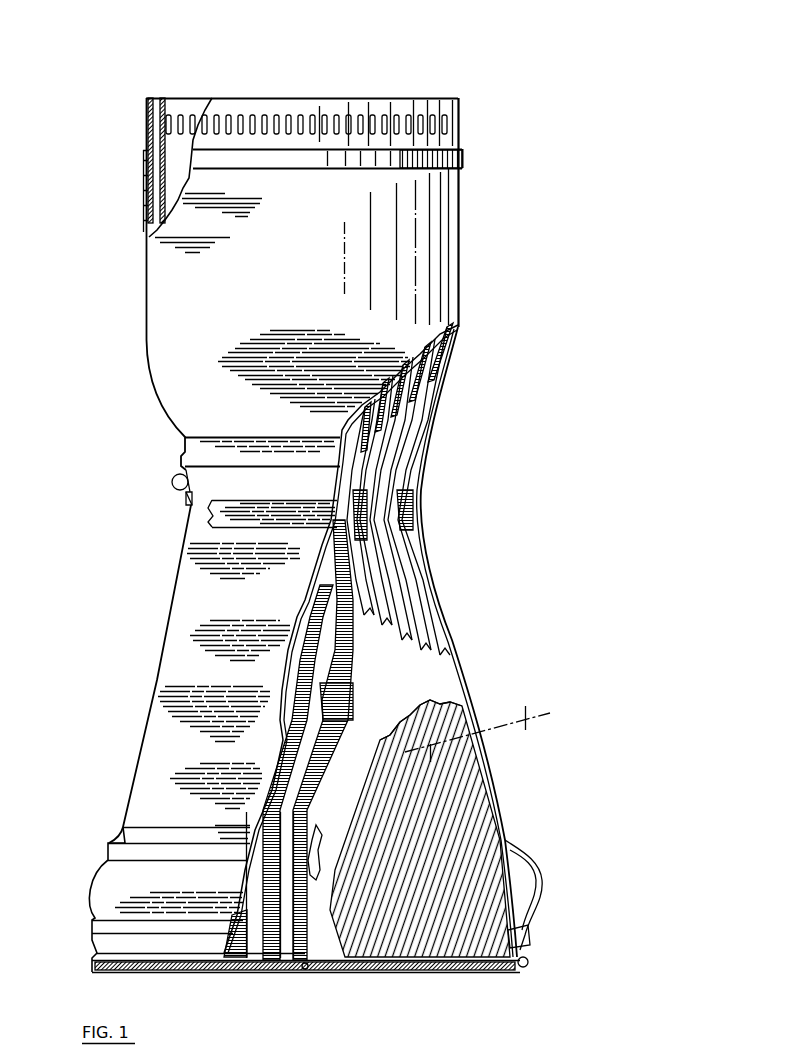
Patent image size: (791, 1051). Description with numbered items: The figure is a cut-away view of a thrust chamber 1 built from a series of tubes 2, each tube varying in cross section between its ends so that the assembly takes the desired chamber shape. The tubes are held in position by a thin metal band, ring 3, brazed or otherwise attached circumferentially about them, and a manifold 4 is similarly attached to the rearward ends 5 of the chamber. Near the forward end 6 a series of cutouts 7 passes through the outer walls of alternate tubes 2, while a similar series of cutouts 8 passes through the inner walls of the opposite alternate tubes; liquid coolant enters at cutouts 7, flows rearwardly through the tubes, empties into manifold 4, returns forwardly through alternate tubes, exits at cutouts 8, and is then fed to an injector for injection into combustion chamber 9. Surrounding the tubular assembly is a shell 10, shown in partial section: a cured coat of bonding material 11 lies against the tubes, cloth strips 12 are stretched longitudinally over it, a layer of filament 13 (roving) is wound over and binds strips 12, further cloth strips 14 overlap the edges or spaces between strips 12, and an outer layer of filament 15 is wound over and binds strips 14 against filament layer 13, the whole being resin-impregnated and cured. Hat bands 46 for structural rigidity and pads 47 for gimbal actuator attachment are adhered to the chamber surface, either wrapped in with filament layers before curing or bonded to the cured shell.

The thrust chamber 1 is at (447, 426).
The tubes 2 is at (149, 107).
The ring 3 is at (462, 158).
The manifold 4 is at (497, 960).
The rearward ends 5 is at (278, 973).
The forward end 6 is at (460, 104).
The cutouts 7 is at (377, 115).
The cutouts 8 is at (181, 113).
The combustion chamber 9 is at (178, 185).
The shell 10 is at (460, 639).
The bonding material 11 is at (430, 690).
The cloth strips 12 is at (318, 862).
The filament layer 13 is at (440, 368).
The cloth strips 14 is at (310, 617).
The outer filament layer 15 is at (178, 722).
The hat bands 46 is at (112, 887).
The pads 47 is at (172, 484).